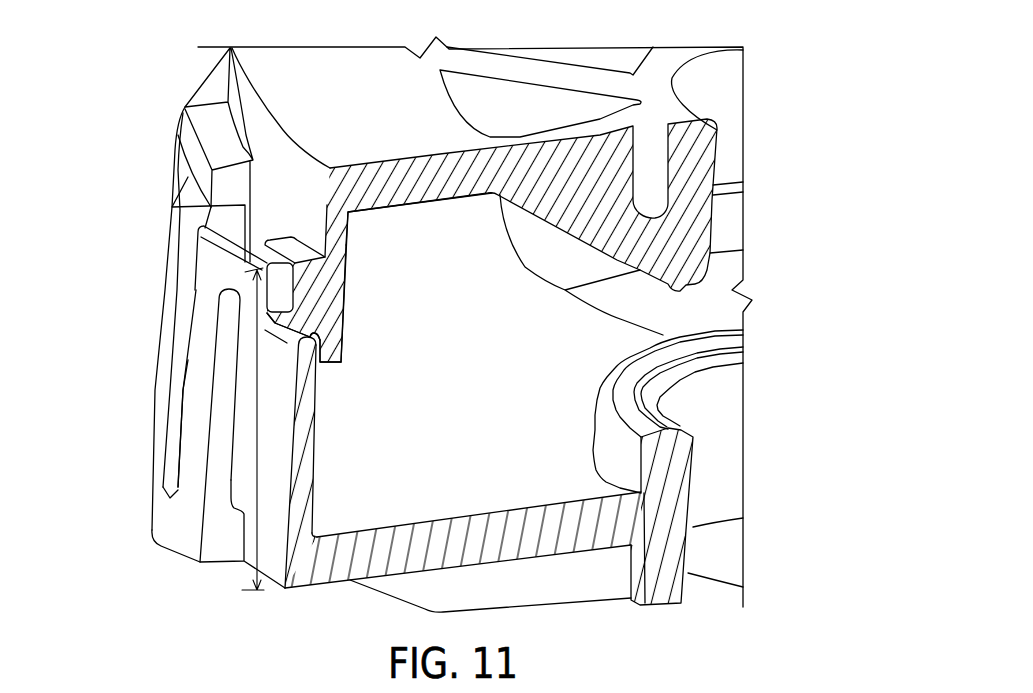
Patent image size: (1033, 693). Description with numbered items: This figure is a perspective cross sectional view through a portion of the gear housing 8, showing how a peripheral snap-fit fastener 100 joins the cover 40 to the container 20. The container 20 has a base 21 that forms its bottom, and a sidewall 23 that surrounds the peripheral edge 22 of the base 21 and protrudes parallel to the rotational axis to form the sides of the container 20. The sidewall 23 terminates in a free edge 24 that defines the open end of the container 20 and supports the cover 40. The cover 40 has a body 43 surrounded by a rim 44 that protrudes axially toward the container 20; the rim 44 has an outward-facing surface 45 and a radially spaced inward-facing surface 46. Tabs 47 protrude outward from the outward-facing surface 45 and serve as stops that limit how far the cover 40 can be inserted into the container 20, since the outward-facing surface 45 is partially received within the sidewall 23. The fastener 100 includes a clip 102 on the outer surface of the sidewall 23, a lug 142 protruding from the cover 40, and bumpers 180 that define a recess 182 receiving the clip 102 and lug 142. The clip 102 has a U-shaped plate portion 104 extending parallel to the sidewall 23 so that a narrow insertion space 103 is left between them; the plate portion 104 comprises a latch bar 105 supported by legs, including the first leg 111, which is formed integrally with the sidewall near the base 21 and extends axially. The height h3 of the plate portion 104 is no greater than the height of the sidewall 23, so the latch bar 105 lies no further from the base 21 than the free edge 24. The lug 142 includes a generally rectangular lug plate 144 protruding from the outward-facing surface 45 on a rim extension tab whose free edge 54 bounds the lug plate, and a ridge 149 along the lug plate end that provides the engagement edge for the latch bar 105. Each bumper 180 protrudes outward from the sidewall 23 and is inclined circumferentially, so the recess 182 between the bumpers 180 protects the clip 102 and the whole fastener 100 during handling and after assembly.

The battery pack assembly 8 is at (141, 56).
The peripheral snap-fit fastener 100 is at (146, 189).
The tab 47 is at (197, 122).
The outward-facing surface 45 is at (308, 165).
The cover body 43 is at (445, 162).
The cover 40 is at (438, 198).
The rim 44 is at (348, 234).
The inward-facing surface 46 is at (348, 276).
The lug 142 is at (333, 297).
The lug plate 144 is at (276, 336).
The sidewall free edge 24 is at (320, 337).
The free edge of the extension tab 54 is at (336, 363).
The ridge 149 is at (313, 340).
The latch bar 105 is at (222, 261).
The bumper 180 is at (160, 343).
The clip 102 is at (190, 403).
The plate portion 104 is at (209, 384).
The first leg 111 is at (190, 433).
The recess 182 is at (168, 475).
The insertion space 103 is at (230, 480).
The sidewall 23 is at (303, 472).
The base peripheral edge 22 is at (317, 533).
The container 20 is at (543, 548).
The base 21 is at (490, 596).
The height of the plate portion h3 is at (254, 429).